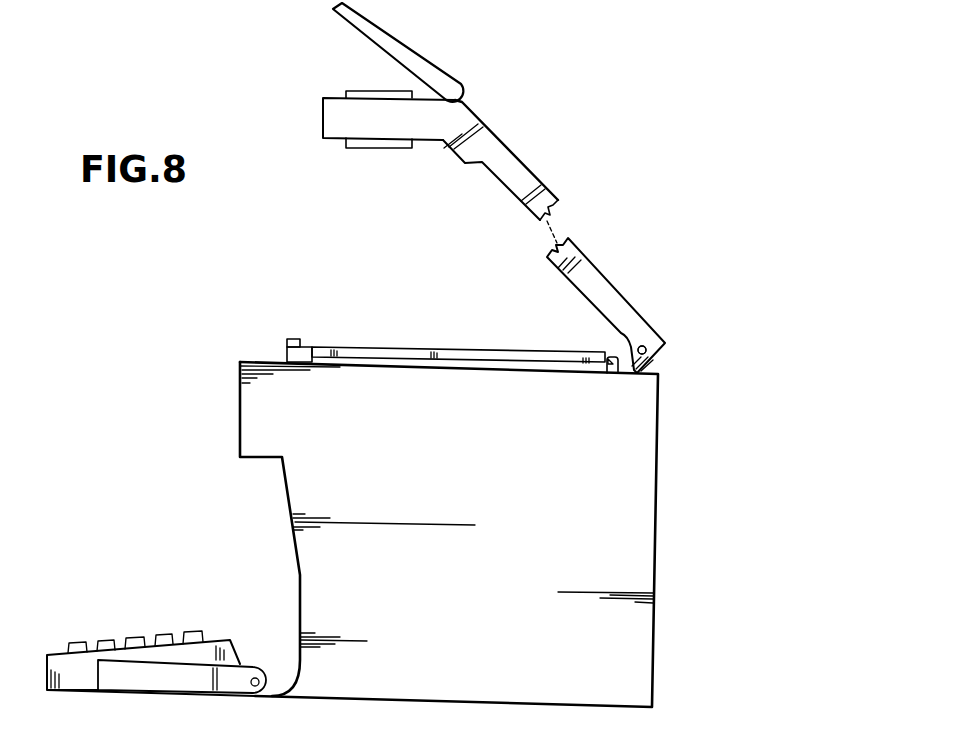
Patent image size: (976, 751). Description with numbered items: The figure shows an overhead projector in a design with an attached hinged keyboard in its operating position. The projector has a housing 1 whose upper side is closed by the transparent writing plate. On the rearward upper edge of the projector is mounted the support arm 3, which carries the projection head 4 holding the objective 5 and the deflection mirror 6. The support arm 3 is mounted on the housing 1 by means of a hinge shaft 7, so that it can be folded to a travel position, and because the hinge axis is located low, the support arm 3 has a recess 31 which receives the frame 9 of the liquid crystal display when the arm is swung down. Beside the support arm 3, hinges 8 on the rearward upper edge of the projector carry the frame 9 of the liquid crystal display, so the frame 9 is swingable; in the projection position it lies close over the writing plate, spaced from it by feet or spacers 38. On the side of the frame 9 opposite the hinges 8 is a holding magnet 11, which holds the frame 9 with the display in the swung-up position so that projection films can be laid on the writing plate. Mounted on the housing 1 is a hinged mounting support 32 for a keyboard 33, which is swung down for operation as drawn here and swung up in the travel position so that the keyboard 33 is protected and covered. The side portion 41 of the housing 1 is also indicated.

The housing 1 is at (259, 412).
The support arm 3 is at (518, 176).
The projection head 4 is at (335, 120).
The objective 5 is at (378, 148).
The deflection mirror 6 is at (407, 56).
The hinge shaft 7 is at (647, 347).
The hinges 8 is at (607, 357).
The frame 9 is at (392, 347).
The holding magnet 11 is at (293, 339).
The recess 31 is at (493, 187).
The hinged mounting support 32 is at (162, 682).
The keyboard 33 is at (77, 678).
The spacers 38 is at (308, 358).
The side portion 41 is at (296, 530).